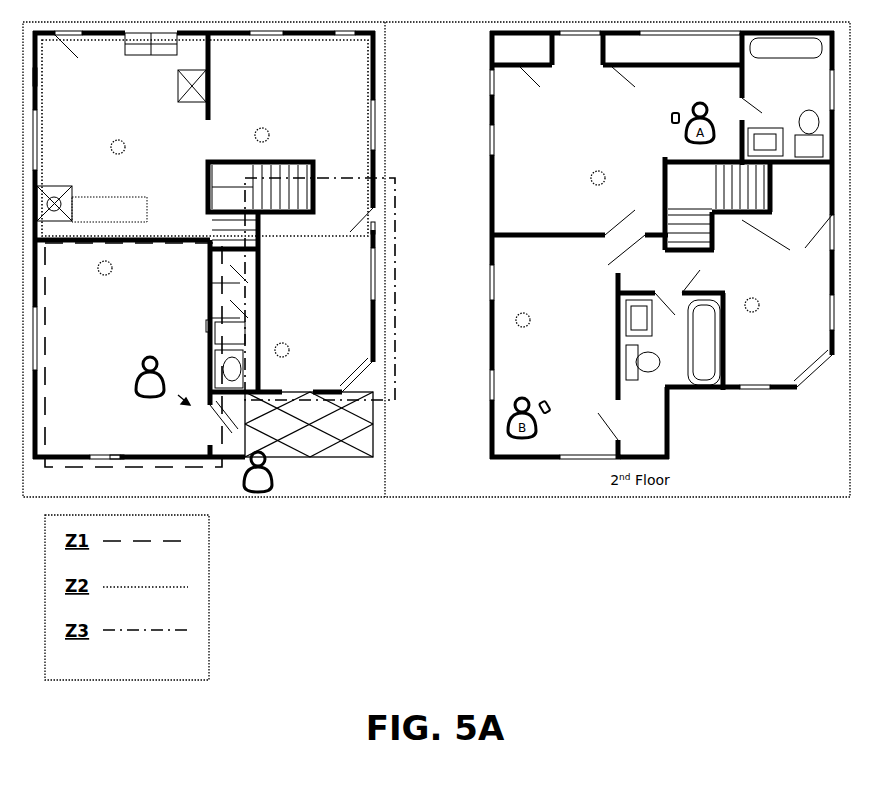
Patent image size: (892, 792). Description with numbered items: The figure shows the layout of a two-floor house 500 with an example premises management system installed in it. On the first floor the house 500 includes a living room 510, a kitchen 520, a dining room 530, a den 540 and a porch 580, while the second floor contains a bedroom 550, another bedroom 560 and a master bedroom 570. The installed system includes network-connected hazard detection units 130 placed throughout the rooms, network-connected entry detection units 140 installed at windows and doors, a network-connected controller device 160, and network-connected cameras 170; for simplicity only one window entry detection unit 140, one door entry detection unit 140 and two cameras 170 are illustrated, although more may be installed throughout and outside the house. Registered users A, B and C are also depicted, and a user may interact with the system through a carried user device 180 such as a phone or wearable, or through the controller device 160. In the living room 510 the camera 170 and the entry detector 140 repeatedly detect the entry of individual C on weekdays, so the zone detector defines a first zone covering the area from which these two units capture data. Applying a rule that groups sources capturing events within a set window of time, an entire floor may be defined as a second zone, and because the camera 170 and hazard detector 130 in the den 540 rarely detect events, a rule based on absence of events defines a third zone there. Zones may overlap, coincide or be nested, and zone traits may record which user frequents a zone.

The hazard detection unit 130 is at (125, 147).
The entry detection unit 140 is at (120, 455).
The controller device 160 is at (672, 118).
The camera 170 is at (40, 72).
The user device 180 is at (548, 402).
The two-floor house 500 is at (244, 261).
The living room 510 is at (100, 310).
The kitchen 520 is at (118, 99).
The dining room 530 is at (295, 99).
The den 540 is at (318, 295).
The bedroom 550 is at (549, 279).
The bedroom 560 is at (764, 252).
The master bedroom 570 is at (551, 149).
The porch 580 is at (290, 418).